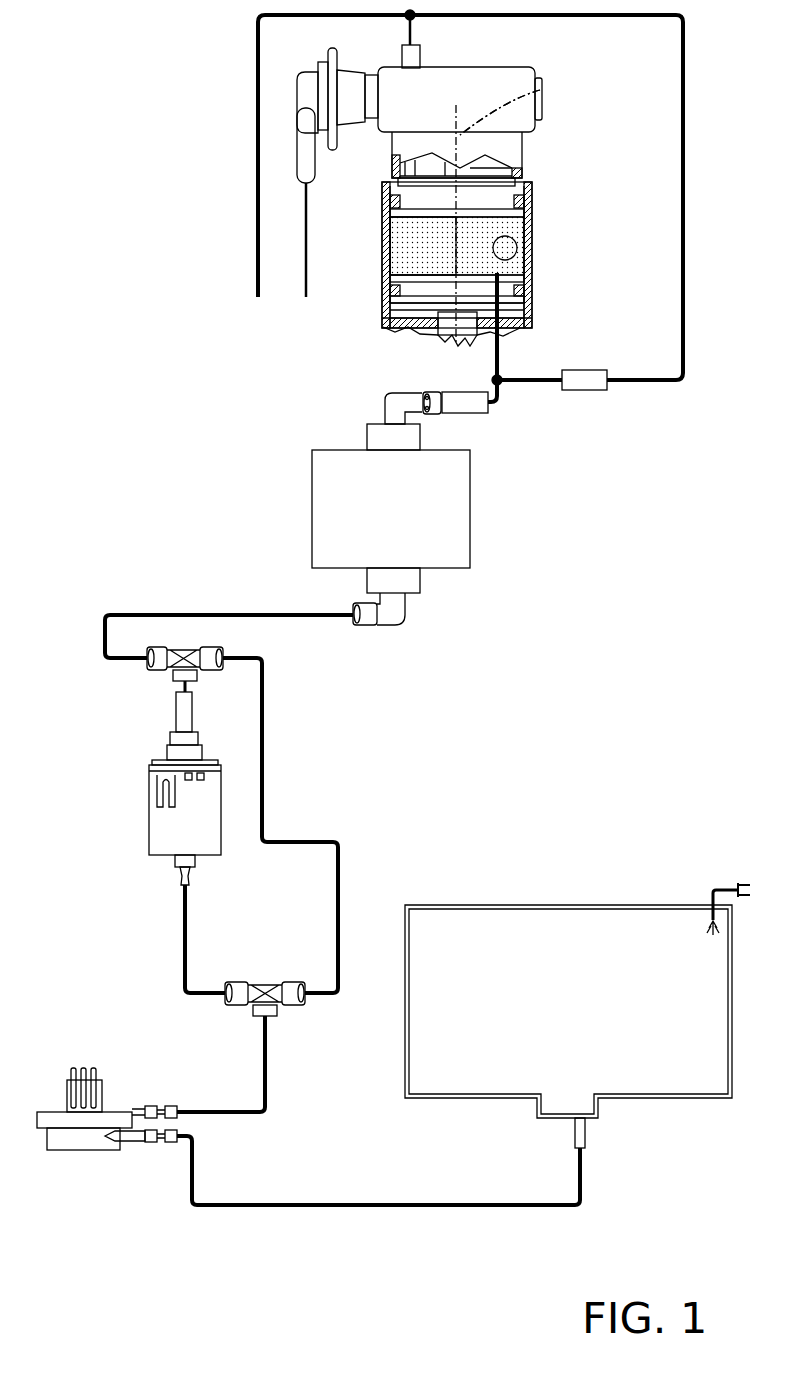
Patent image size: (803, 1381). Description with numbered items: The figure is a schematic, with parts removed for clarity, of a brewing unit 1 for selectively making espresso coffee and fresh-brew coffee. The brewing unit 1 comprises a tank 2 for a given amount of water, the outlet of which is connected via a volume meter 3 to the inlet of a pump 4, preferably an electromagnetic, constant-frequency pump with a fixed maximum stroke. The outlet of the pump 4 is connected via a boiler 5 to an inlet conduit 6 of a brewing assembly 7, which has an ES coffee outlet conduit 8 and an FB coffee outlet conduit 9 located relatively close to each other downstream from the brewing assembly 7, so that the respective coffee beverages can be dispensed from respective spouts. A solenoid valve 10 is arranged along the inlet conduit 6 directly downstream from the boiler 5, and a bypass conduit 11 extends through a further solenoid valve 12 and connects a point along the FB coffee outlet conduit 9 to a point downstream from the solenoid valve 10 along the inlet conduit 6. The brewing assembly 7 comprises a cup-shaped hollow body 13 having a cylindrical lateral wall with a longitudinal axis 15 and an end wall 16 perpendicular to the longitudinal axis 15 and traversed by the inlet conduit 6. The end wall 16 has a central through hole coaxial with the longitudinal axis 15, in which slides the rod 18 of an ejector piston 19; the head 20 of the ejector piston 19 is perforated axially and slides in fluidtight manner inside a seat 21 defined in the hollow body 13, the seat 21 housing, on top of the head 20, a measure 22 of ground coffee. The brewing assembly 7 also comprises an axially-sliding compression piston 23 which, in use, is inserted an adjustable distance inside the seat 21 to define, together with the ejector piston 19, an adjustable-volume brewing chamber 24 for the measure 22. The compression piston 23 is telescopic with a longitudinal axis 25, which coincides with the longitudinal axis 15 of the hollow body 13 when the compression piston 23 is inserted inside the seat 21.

The brewing unit 1 is at (557, 473).
The tank 2 is at (570, 925).
The volume meter 3 is at (75, 1140).
The pump 4 is at (160, 828).
The boiler 5 is at (455, 473).
The inlet conduit 6 is at (497, 340).
The brewing assembly 7 is at (566, 256).
The ES coffee outlet conduit 8 is at (305, 158).
The FB coffee outlet conduit 9 is at (414, 54).
The solenoid valve 10 is at (470, 403).
The bypass conduit 11 is at (681, 288).
The further solenoid valve 12 is at (580, 385).
The cup-shaped hollow body 13 is at (528, 247).
The longitudinal axis 15 is at (542, 88).
The end wall 16 is at (531, 315).
The rod 18 is at (460, 330).
The ejector piston 19 is at (426, 292).
The head 20 is at (412, 288).
The seat 21 is at (510, 237).
The measure of ground coffee 22 is at (535, 212).
The compression piston 23 is at (485, 198).
The brewing chamber 24 is at (405, 252).
The longitudinal axis 25 is at (500, 112).